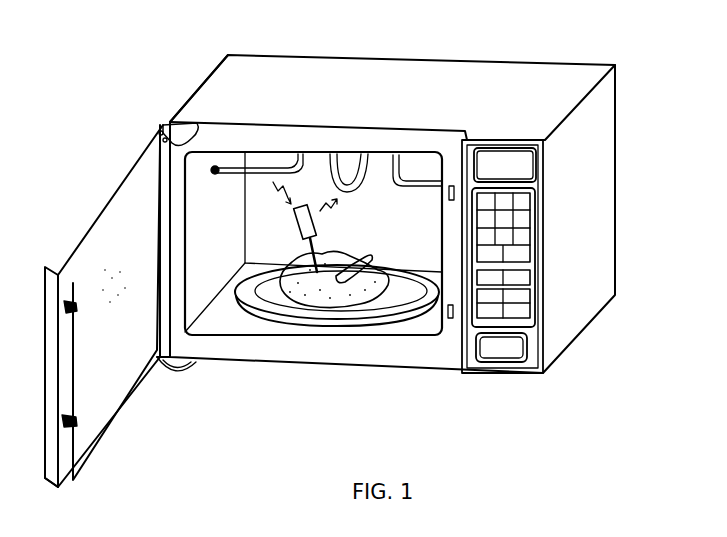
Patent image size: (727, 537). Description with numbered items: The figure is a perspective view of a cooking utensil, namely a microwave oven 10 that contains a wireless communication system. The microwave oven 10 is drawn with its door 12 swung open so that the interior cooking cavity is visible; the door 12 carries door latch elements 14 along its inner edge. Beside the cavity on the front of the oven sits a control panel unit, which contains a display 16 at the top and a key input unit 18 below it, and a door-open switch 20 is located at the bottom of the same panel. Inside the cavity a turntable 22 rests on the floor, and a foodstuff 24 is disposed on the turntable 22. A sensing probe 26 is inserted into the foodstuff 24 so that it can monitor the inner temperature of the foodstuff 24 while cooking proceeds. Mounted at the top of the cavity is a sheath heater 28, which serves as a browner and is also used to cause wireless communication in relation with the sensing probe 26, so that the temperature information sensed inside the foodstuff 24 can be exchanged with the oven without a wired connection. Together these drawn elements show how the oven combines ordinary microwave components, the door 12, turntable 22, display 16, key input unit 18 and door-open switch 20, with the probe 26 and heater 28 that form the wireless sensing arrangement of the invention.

The microwave oven 10 is at (188, 80).
The door 12 is at (72, 246).
The door latch elements 14 is at (77, 308).
The display 16 is at (533, 158).
The key input unit 18 is at (522, 220).
The door-open switch 20 is at (505, 353).
The turntable 22 is at (396, 322).
The foodstuff 24 is at (318, 293).
The sensing probe 26 is at (300, 224).
The sheath heater 28 is at (298, 158).